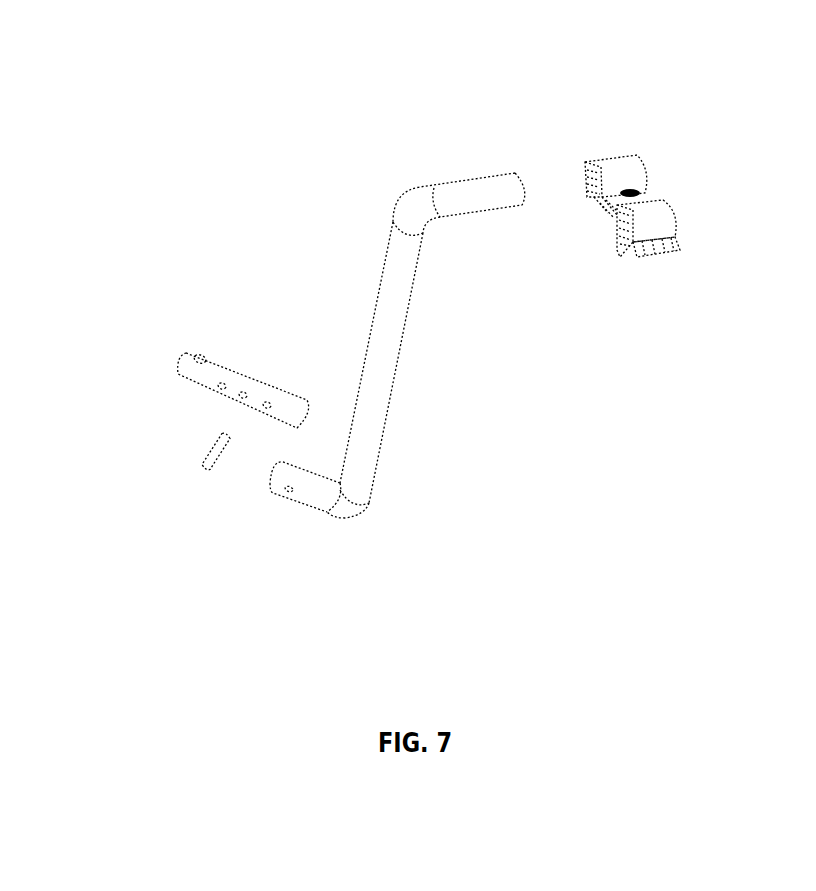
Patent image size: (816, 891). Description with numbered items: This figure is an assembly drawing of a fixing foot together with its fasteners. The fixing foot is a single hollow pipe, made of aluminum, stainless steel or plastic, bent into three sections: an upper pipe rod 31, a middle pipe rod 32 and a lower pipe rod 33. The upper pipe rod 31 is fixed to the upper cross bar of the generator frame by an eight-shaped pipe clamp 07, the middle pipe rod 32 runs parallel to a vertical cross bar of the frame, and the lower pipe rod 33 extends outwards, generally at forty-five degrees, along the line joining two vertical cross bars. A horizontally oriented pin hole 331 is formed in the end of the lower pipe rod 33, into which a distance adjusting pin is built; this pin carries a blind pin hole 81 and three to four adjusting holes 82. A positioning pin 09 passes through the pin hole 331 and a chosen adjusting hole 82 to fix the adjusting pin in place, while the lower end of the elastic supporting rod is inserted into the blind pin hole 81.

The 8-shaped pipe clamp 07 is at (622, 170).
The positioning pin 09 is at (205, 450).
The upper pipe rod 31 is at (468, 190).
The middle pipe rod 32 is at (394, 353).
The lower pipe rod 33 is at (312, 494).
The pin hole 331 is at (289, 489).
The blind pin hole 81 is at (199, 355).
The adjusting holes 82 is at (268, 387).